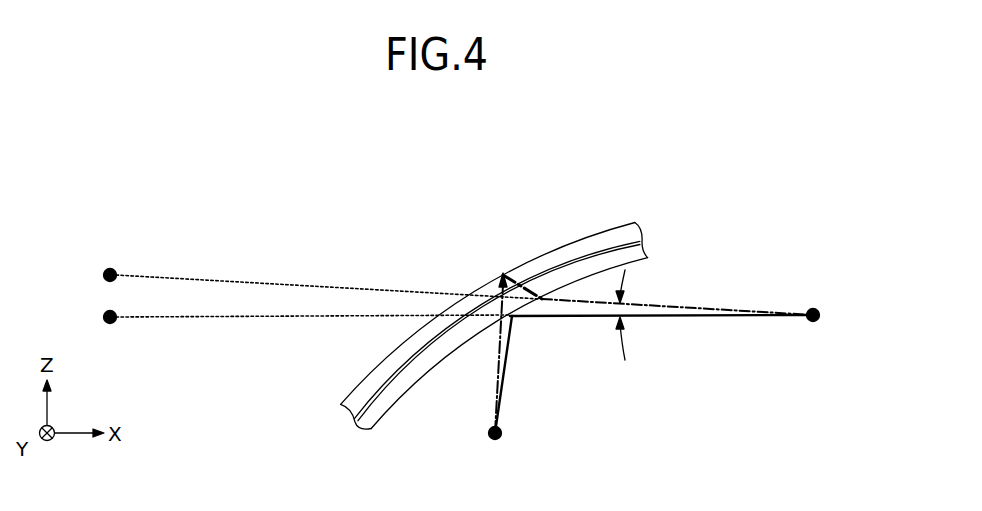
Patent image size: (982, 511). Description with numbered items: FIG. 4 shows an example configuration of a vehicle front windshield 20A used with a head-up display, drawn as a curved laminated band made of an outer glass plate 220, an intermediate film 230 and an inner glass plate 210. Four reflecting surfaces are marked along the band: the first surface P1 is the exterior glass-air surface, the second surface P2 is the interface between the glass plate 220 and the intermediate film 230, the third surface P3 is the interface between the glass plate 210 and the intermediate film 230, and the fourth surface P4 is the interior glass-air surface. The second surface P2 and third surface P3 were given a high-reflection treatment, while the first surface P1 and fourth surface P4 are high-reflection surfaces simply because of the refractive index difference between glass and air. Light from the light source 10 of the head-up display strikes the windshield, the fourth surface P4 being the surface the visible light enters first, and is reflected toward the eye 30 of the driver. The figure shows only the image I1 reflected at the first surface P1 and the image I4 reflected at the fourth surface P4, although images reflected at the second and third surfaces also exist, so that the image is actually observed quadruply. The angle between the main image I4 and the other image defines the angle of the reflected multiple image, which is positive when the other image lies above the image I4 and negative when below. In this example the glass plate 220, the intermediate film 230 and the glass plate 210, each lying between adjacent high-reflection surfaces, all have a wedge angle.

The light source 10 is at (492, 435).
The front windshield 20A is at (572, 310).
The glass plate 210 is at (645, 252).
The glass plate 220 is at (630, 232).
The intermediate film 230 is at (635, 242).
The eye 30 is at (816, 312).
The image reflected at the first surface I1 is at (105, 272).
The image reflected at the fourth surface I4 is at (105, 314).
The first surface P1 is at (513, 270).
The second surface P2 is at (543, 272).
The third surface P3 is at (573, 262).
The fourth surface P4 is at (605, 272).